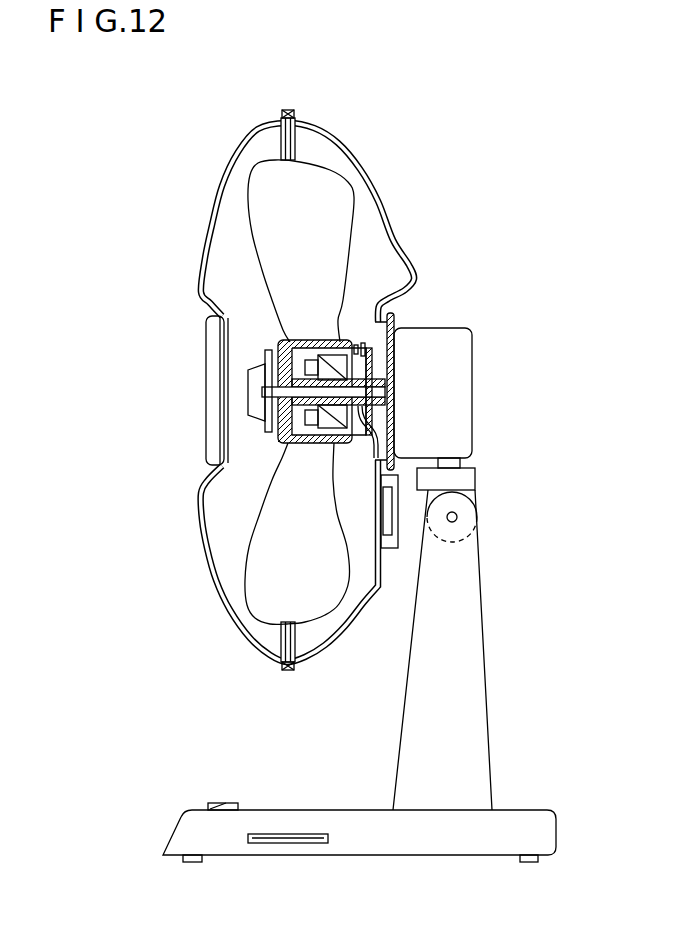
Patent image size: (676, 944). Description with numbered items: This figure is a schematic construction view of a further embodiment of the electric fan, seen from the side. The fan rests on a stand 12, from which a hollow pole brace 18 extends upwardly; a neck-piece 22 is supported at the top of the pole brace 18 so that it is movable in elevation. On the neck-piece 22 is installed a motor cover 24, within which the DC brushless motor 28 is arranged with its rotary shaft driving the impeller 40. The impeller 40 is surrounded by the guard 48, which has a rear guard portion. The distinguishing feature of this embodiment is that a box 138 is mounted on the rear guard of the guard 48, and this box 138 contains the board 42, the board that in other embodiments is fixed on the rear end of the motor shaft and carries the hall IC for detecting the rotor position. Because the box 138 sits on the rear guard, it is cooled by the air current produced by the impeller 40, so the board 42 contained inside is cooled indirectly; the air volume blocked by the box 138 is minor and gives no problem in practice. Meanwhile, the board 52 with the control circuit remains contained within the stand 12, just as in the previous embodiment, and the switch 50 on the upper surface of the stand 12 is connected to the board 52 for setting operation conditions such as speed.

The stand 12 is at (318, 808).
The pole brace 18 is at (473, 707).
The neck-piece 22 is at (470, 490).
The motor cover 24 is at (457, 347).
The DC brushless motor 28 is at (360, 337).
The impeller 40 is at (263, 610).
The board 42 is at (392, 508).
The guard 48 is at (221, 590).
The switch 50 is at (228, 803).
The board 52 is at (277, 833).
The box 138 is at (397, 538).